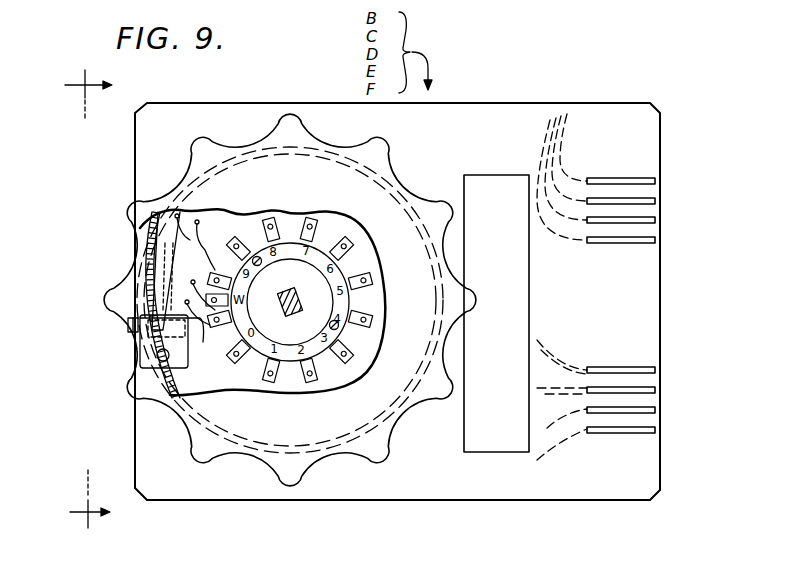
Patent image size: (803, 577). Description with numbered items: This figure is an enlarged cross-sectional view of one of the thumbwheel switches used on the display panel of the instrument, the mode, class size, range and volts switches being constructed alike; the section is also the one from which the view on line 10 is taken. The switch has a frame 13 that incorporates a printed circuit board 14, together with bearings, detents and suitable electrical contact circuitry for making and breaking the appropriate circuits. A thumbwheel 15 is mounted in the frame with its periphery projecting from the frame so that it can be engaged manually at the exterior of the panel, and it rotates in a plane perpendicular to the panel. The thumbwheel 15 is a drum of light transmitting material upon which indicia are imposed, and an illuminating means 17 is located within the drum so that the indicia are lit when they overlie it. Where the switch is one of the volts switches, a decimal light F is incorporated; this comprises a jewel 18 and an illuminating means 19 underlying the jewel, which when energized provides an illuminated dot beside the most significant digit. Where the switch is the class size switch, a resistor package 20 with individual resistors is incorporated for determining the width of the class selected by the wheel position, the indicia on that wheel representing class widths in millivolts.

The section line 10- 10 is at (77, 301).
The frame 13 is at (511, 482).
The printed circuit board 14 is at (596, 287).
The thumbwheel 15 is at (351, 454).
The illuminating means 17 is at (150, 270).
The jewel 18 is at (128, 325).
The illuminating means 19 is at (190, 343).
The resistor package 20 is at (496, 313).
The decimal light F is at (120, 334).